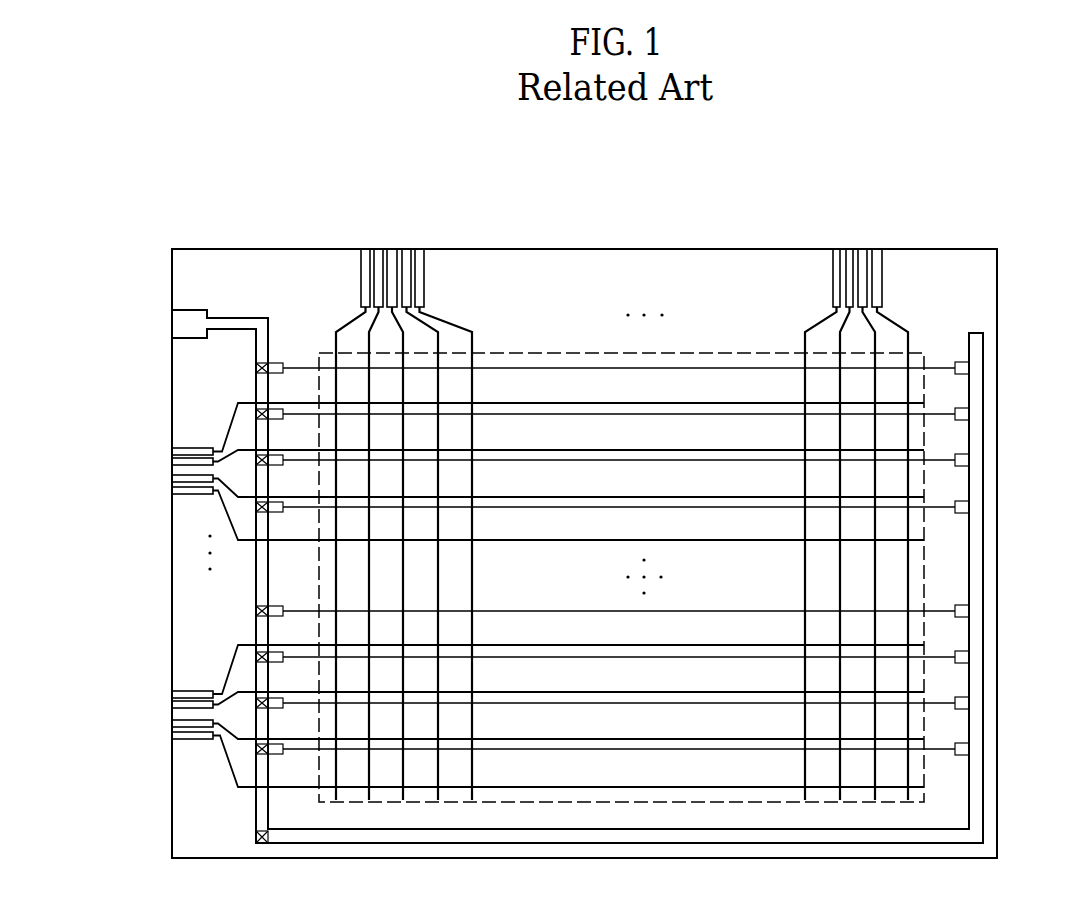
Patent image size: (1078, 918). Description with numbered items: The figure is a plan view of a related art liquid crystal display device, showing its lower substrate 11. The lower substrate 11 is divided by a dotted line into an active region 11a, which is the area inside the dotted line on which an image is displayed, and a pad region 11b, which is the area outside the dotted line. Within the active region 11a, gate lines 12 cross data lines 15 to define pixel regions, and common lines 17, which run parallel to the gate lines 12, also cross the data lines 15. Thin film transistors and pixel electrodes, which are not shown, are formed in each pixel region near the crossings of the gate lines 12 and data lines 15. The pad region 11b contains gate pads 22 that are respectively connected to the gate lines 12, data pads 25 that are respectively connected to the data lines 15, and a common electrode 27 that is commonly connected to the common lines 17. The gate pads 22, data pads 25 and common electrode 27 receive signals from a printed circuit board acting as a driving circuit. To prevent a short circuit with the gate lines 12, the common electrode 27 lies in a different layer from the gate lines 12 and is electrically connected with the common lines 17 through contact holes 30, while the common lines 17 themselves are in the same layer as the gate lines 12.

The lower substrate 11 is at (998, 590).
The active region 11a is at (897, 384).
The pad region 11b is at (753, 263).
The gate lines 12 is at (602, 460).
The data lines 15 is at (473, 388).
The common lines 17 is at (324, 462).
The gate pads 22 is at (178, 451).
The data pads 25 is at (365, 250).
The common electrode 27 is at (258, 591).
The contact holes 30 is at (257, 659).